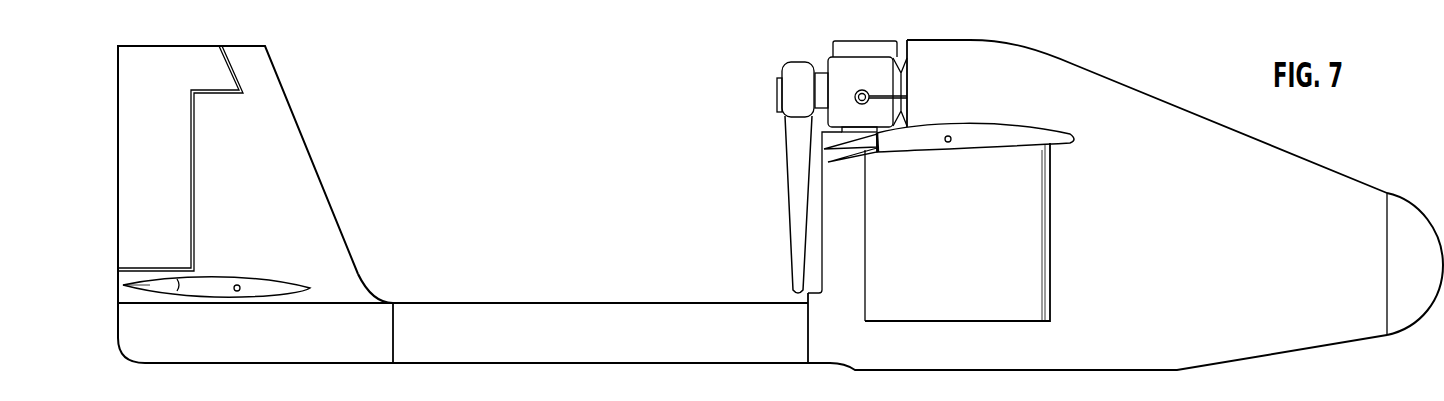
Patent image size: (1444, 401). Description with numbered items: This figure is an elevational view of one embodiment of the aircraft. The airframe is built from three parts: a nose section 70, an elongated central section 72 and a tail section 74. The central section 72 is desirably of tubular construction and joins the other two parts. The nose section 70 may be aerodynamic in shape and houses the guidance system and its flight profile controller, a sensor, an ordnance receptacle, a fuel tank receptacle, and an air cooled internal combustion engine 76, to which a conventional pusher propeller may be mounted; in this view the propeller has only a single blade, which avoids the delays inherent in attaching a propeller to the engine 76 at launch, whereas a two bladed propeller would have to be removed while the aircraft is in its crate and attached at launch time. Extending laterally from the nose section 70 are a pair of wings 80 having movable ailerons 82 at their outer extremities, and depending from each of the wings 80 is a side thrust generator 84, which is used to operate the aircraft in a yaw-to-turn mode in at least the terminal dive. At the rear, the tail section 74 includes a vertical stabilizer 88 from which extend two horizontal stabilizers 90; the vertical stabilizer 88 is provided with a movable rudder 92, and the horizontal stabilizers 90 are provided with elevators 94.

The nose section 70 is at (1342, 188).
The elongated central section 72 is at (583, 355).
The tail section 74 is at (343, 288).
The air cooled internal combustion engine 76 is at (832, 67).
The wings 80 is at (998, 127).
The movable ailerons 82 is at (880, 152).
The side thrust generator 84 is at (1033, 217).
The vertical stabilizer 88 is at (290, 137).
The horizontal stabilizers 90 is at (272, 280).
The movable rudder 92 is at (183, 57).
The elevators 94 is at (155, 287).